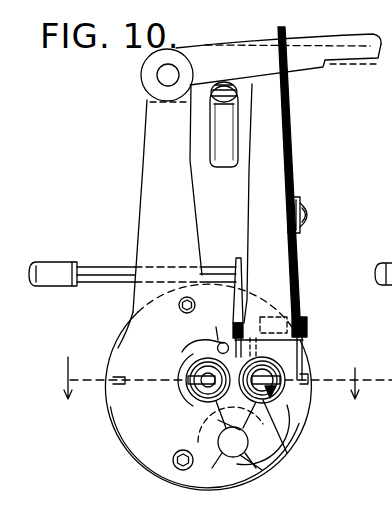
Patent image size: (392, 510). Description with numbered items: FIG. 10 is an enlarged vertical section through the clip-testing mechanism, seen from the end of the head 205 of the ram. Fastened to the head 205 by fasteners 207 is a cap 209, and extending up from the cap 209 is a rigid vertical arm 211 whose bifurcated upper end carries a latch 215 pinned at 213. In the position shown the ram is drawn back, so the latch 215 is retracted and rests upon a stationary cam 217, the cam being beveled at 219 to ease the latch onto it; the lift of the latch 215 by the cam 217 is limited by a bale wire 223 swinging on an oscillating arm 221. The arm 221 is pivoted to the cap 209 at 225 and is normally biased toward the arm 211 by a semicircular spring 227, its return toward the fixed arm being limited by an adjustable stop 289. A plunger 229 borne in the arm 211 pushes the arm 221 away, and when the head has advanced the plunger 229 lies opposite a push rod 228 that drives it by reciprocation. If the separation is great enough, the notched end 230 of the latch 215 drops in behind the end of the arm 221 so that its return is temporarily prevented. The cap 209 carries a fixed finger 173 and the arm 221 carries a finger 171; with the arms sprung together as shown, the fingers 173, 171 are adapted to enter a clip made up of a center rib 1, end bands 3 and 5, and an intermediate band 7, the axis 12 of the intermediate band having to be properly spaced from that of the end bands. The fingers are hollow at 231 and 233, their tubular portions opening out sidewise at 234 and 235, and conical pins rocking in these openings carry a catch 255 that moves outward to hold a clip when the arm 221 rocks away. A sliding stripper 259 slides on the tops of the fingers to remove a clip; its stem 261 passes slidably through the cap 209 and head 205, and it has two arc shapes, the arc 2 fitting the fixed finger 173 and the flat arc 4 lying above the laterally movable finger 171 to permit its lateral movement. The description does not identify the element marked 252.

The pin 213 is at (170, 66).
The latch 215 is at (232, 41).
The bale wire 223 is at (283, 28).
The notched end 230 is at (327, 63).
The bevel 219 is at (222, 105).
The stationary cam 217 is at (231, 128).
The rigid vertical arm 211 is at (152, 178).
The oscillating arm 221 is at (273, 187).
The push rod 228 is at (53, 264).
The plunger 229 is at (113, 268).
The finger 171 is at (246, 303).
The adjustable stop 289 is at (300, 320).
The cap 209 is at (120, 348).
The fasteners 207 is at (178, 312).
The arc shape 2 is at (174, 346).
The stem 261 is at (204, 352).
The center rib 1 is at (216, 327).
The arc 4 is at (306, 345).
The catch 255 is at (282, 370).
The axis 12 is at (218, 376).
The sliding stripper 259 is at (190, 356).
The hub ring 252 is at (195, 378).
The sidewise opening 235 is at (191, 389).
The hollow 233 is at (200, 401).
The head 205 is at (296, 388).
The intermediate band 7 is at (200, 401).
The end band 5 is at (290, 398).
The sidewise opening 234 is at (280, 405).
The end band 3 is at (280, 420).
The finger 173 is at (230, 438).
The hollow 231 is at (277, 433).
The semicircular spring 227 is at (144, 467).
The pivot 225 is at (262, 461).